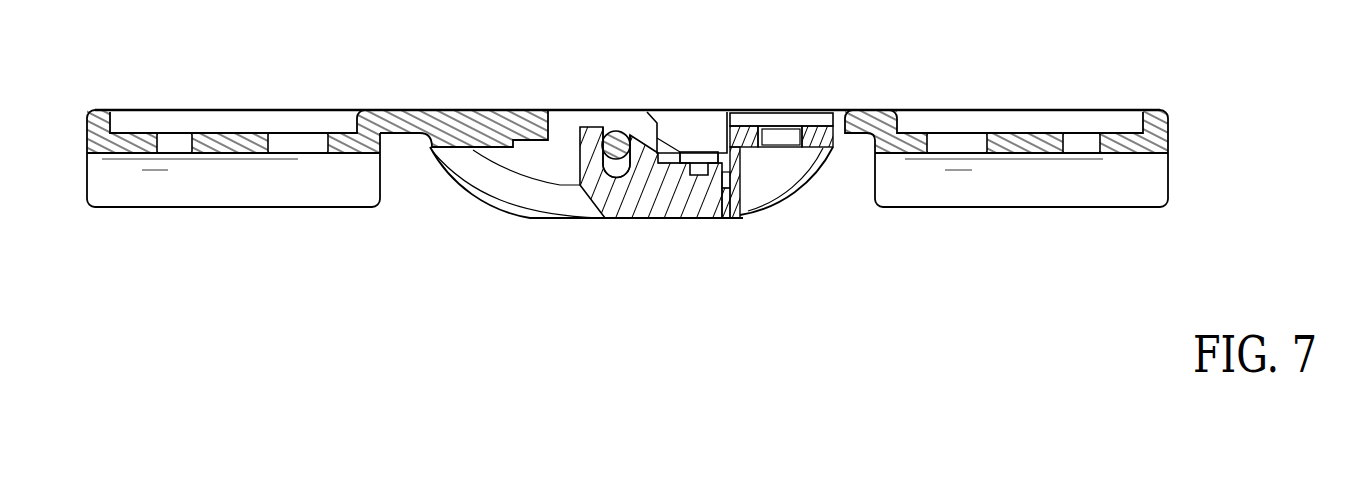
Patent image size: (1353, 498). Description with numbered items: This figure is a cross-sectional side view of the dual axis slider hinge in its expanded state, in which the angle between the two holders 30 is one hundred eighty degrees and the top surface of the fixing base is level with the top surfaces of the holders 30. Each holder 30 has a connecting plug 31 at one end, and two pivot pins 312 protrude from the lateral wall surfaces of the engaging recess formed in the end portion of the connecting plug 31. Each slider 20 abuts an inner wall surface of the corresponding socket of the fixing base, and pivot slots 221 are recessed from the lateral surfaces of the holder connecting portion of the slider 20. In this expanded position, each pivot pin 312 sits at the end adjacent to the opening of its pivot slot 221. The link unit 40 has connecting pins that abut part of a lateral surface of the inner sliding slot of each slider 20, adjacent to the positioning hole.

The holder 30 is at (366, 133).
The connecting plug 31 is at (545, 205).
The pivot pin 312 is at (611, 131).
The pivot slot 221 is at (614, 176).
The slider 20 is at (677, 200).
The link unit 40 is at (693, 146).